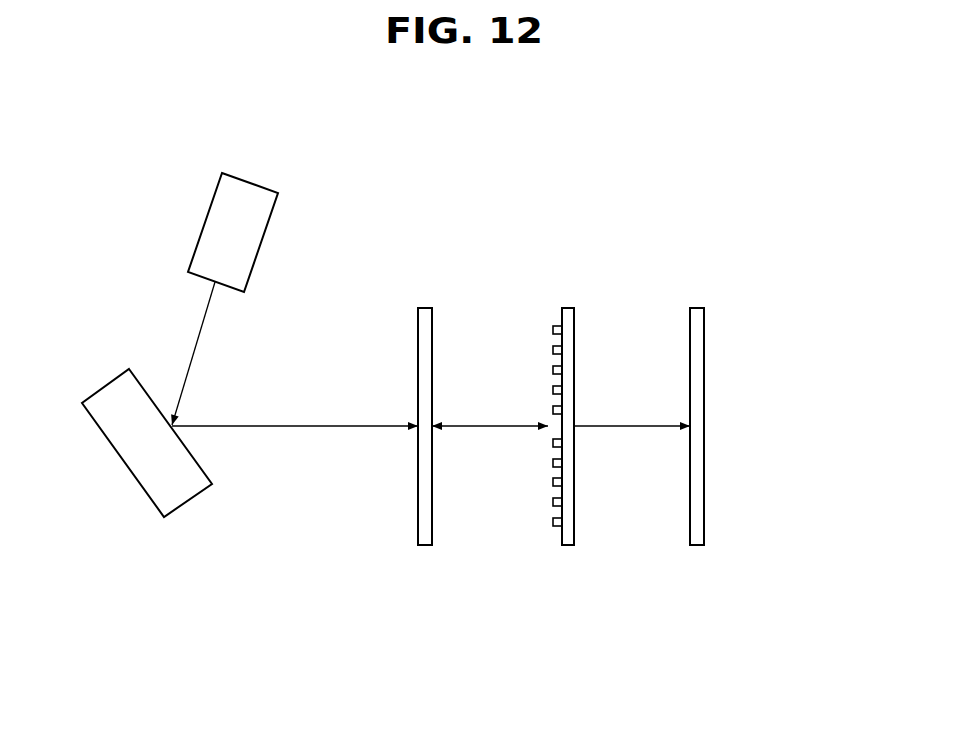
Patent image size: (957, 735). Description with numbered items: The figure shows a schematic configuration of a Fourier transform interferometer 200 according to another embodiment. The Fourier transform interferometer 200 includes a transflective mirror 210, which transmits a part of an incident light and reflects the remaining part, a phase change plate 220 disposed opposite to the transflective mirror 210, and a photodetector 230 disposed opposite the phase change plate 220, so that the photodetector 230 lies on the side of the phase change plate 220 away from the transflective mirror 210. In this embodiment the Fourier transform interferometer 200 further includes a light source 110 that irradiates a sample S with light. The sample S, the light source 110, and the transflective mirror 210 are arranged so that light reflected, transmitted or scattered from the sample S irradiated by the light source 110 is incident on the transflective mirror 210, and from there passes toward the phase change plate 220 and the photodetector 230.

The light source 110 is at (243, 179).
The sample S is at (138, 487).
The Fourier transform interferometer 200 is at (767, 280).
The transflective mirror 210 is at (425, 307).
The phase change plate 220 is at (566, 307).
The photodetector 230 is at (697, 307).